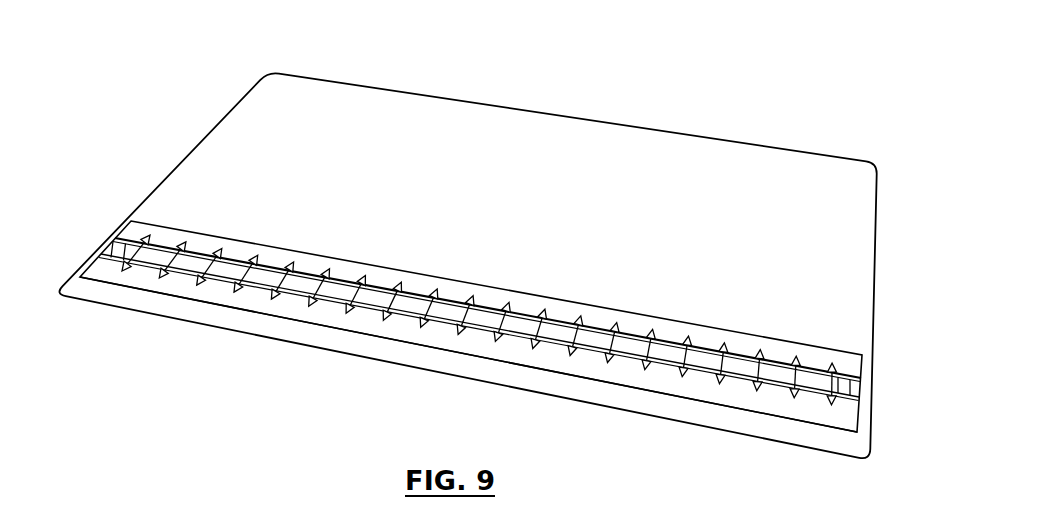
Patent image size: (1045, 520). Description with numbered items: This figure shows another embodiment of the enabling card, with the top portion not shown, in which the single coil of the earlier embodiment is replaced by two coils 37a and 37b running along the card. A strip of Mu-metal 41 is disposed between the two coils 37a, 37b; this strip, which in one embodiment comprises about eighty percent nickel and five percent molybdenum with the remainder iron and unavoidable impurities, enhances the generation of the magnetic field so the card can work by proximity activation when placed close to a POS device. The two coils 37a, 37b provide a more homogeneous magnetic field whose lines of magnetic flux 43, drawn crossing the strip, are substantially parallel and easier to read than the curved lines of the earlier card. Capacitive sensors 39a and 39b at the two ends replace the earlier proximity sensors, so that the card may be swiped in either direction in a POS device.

The coil 37a is at (139, 230).
The coil 37b is at (97, 266).
The capacitive sensor 39a is at (113, 242).
The capacitive sensor 39b is at (848, 382).
The strip of Mu-metal 41 is at (447, 312).
The lines of magnetic field 43 is at (512, 301).